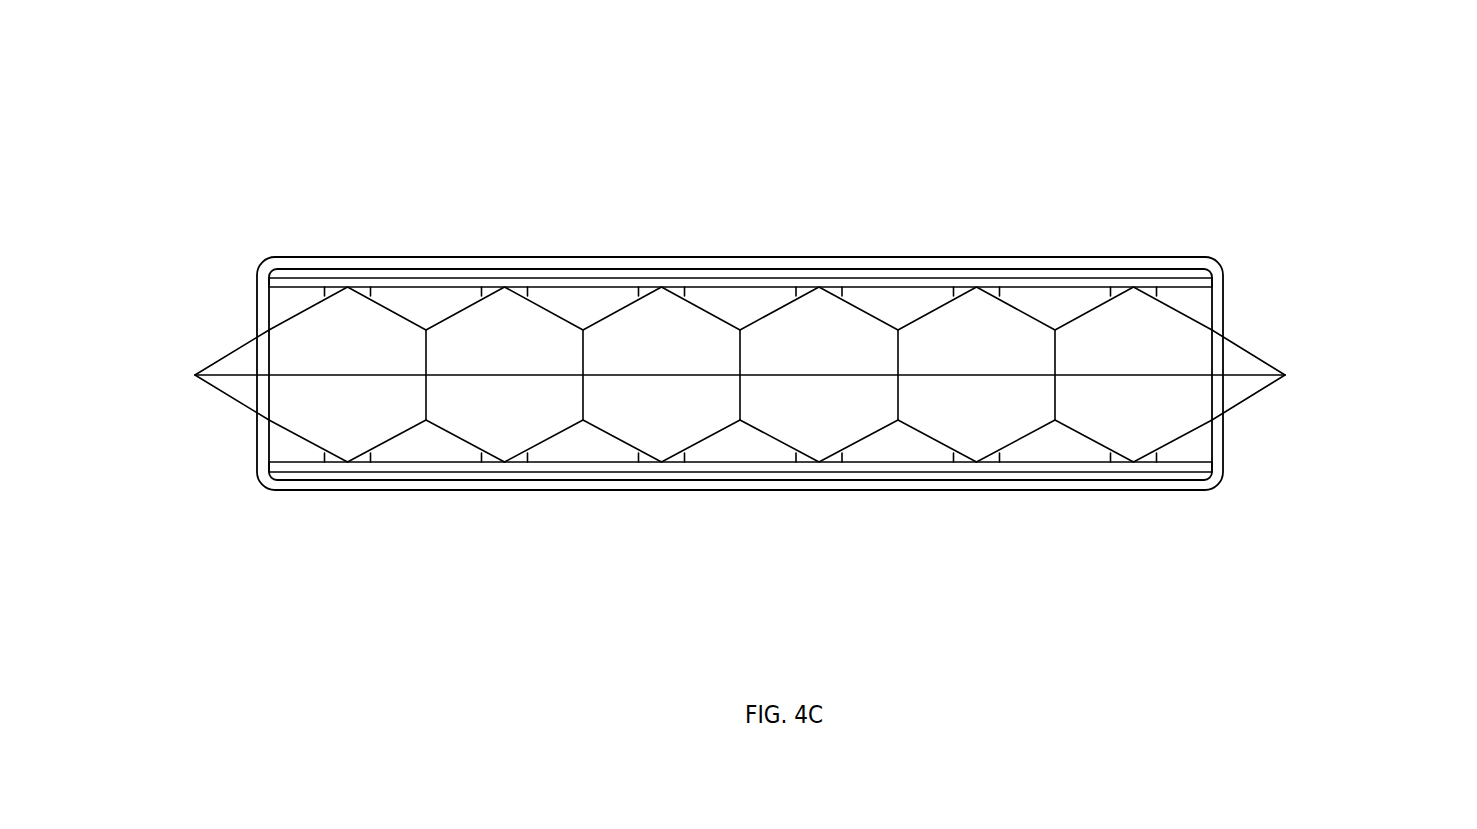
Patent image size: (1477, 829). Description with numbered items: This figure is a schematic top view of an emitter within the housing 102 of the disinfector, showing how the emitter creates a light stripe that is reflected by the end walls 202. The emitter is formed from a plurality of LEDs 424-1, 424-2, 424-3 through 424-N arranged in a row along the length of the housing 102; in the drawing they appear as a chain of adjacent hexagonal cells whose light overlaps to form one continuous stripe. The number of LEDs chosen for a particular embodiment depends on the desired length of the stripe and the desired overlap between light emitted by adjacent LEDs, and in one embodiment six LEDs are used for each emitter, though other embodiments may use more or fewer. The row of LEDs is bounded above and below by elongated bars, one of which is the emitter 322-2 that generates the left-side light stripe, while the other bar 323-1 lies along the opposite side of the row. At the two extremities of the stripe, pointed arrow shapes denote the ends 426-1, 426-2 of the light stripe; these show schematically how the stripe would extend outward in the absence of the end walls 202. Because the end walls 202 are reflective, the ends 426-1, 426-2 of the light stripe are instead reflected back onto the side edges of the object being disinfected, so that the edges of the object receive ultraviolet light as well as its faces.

The housing 102 is at (858, 262).
The end walls 202 is at (270, 303).
The upper support layer 323-1 is at (1052, 282).
The emitter 322-2 is at (1045, 468).
The LED 424-1 is at (346, 290).
The LED 424-2 is at (503, 291).
The LED 424-3 is at (662, 290).
The LED 424-N is at (1130, 288).
The end of light stripe 426-1 is at (240, 345).
The end of light stripe 426-2 is at (240, 403).